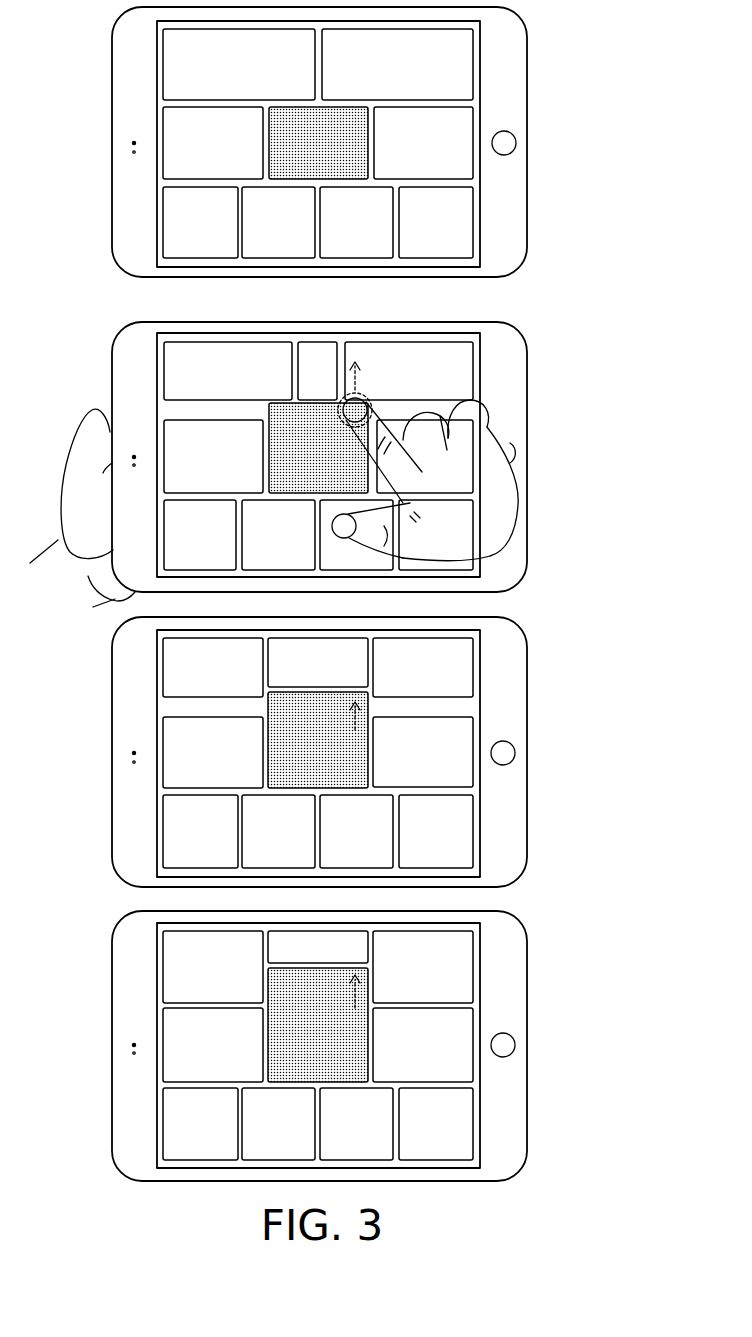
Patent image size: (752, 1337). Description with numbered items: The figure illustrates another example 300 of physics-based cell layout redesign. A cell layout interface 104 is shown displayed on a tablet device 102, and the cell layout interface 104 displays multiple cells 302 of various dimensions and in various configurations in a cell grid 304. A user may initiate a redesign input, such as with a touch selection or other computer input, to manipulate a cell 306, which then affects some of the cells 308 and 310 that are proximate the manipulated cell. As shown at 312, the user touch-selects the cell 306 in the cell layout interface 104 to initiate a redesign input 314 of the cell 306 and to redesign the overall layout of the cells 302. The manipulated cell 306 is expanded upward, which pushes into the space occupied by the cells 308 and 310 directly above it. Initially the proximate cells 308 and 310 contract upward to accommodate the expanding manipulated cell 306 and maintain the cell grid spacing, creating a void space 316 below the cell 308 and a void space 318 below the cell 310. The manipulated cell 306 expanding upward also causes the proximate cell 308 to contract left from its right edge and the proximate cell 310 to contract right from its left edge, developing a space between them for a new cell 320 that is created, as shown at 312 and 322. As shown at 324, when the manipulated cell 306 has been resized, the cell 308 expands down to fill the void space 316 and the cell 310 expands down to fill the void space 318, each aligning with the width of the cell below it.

The tablet device 102 is at (113, 142).
The cell layout interface 104 is at (155, 165).
The example of physics-based cell layout redesign 300 is at (546, 76).
The cells 302 is at (432, 207).
The cell grid 304 is at (162, 88).
The manipulated cell 306 is at (301, 152).
The proximate cell 308 is at (222, 74).
The proximate cell 310 is at (381, 74).
The touch-selection state 312 is at (546, 390).
The redesign input 314 is at (367, 380).
The void space 316 is at (218, 410).
The void space 318 is at (423, 410).
The new cell 320 is at (302, 381).
The intermediate redesign state 322 is at (546, 682).
The resized state 324 is at (547, 992).